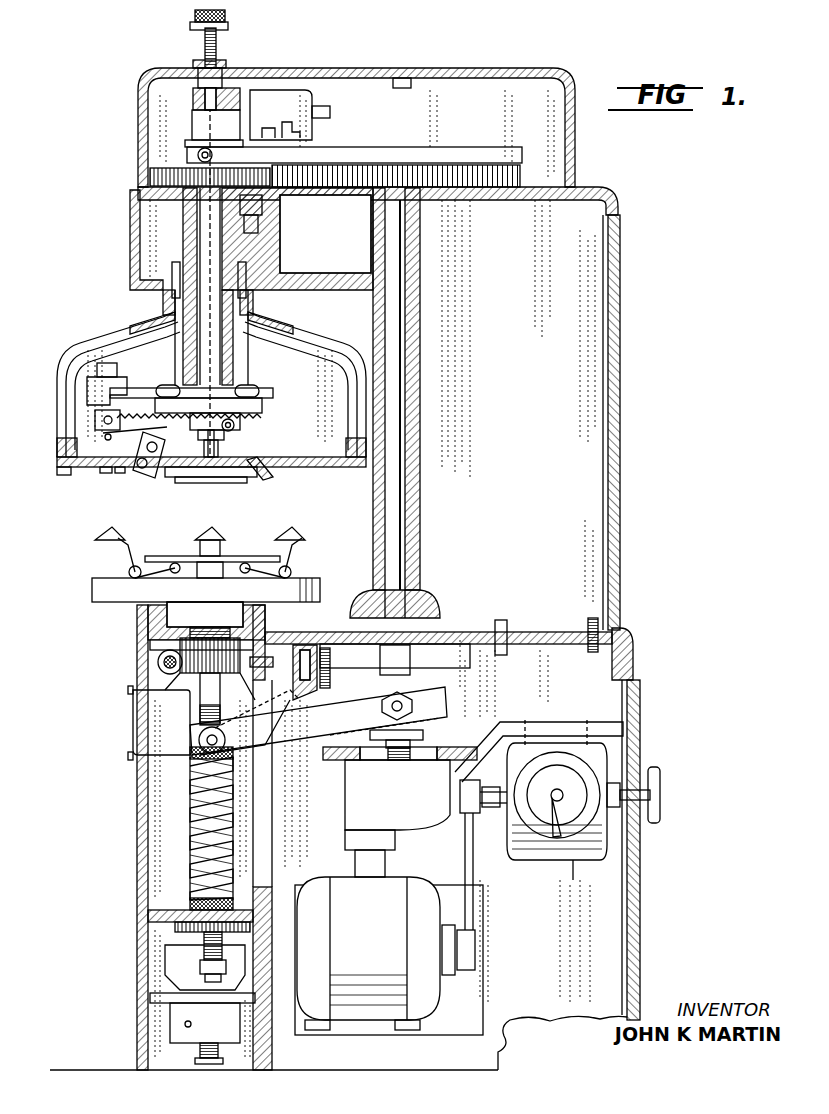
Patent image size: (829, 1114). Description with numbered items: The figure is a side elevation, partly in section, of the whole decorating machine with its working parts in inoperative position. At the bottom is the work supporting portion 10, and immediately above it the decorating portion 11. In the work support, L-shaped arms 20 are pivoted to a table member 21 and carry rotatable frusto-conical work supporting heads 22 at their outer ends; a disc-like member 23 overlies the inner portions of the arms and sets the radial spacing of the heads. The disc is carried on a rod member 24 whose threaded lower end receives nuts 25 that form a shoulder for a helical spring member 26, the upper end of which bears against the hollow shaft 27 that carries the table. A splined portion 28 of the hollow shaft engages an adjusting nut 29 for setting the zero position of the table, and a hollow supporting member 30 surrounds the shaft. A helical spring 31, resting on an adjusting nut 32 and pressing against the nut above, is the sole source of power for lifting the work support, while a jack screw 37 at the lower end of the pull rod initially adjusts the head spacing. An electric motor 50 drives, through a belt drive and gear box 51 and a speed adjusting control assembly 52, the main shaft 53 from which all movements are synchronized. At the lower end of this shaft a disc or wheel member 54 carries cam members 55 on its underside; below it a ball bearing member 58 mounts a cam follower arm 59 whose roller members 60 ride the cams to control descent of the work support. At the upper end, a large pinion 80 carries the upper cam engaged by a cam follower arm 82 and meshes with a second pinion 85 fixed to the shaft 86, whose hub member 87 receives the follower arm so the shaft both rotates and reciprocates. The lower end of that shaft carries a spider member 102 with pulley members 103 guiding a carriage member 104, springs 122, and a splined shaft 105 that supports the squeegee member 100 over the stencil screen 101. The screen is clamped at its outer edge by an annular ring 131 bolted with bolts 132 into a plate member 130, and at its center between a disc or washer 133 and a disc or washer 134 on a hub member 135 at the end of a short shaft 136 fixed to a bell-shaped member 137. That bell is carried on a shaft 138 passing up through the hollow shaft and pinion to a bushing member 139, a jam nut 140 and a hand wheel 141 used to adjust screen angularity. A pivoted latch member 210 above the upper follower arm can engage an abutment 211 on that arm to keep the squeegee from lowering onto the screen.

The work supporting portion 10 is at (78, 597).
The decorating portion 11 is at (58, 375).
The L-shaped arms 20 is at (126, 556).
The table member 21 is at (322, 590).
The work supporting head 22 is at (110, 528).
The disc-like member 23 is at (240, 556).
The rod member 24 is at (205, 578).
The nuts 25 is at (200, 967).
The helical spring member 26 is at (165, 948).
The hollow shaft 27 is at (200, 690).
The splined portion 28 is at (200, 716).
The adjusting nut 29 is at (192, 752).
The hollow supporting member 30 is at (200, 815).
The helical spring 31 is at (190, 840).
The adjusting nut 32 is at (185, 904).
The jack screw 37 is at (223, 1052).
The electric motor 50 is at (349, 928).
The belt drive and gear box 51 is at (405, 830).
The speed adjusting control assembly 52 is at (538, 850).
The main shaft 53 is at (395, 570).
The disc or wheel member 54 is at (470, 634).
The cam members 55 is at (297, 675).
The ball bearing member 58 is at (420, 728).
The cam follower arm 59 is at (283, 745).
The roller members 60 is at (305, 710).
The large pinion 80 is at (463, 167).
The cam follower arm 82 is at (360, 147).
The second pinion 85 is at (152, 170).
The shaft 86 is at (198, 222).
The hub member 87 is at (192, 136).
The squeegee member 100 is at (146, 476).
The stencil screen 101 is at (282, 468).
The spider member 102 is at (262, 405).
The pulley members 103 is at (172, 385).
The carriage member 104 is at (236, 388).
The splined shaft 105 is at (87, 403).
The springs 122 is at (240, 421).
The plate member 130 is at (64, 475).
The annular ring 131 is at (105, 473).
The bolts 132 is at (120, 473).
The disc or washer 133 is at (185, 484).
The disc or washer 134 is at (250, 478).
The hub member 135 is at (205, 478).
The short shaft 136 is at (216, 468).
The bell-shaped member 137 is at (262, 458).
The shaft 138 is at (205, 43).
The bushing member 139 is at (196, 98).
The jam nut 140 is at (224, 61).
The hand wheel 141 is at (226, 23).
The pivoted latch member 210 is at (291, 128).
The abutment 211 is at (268, 128).